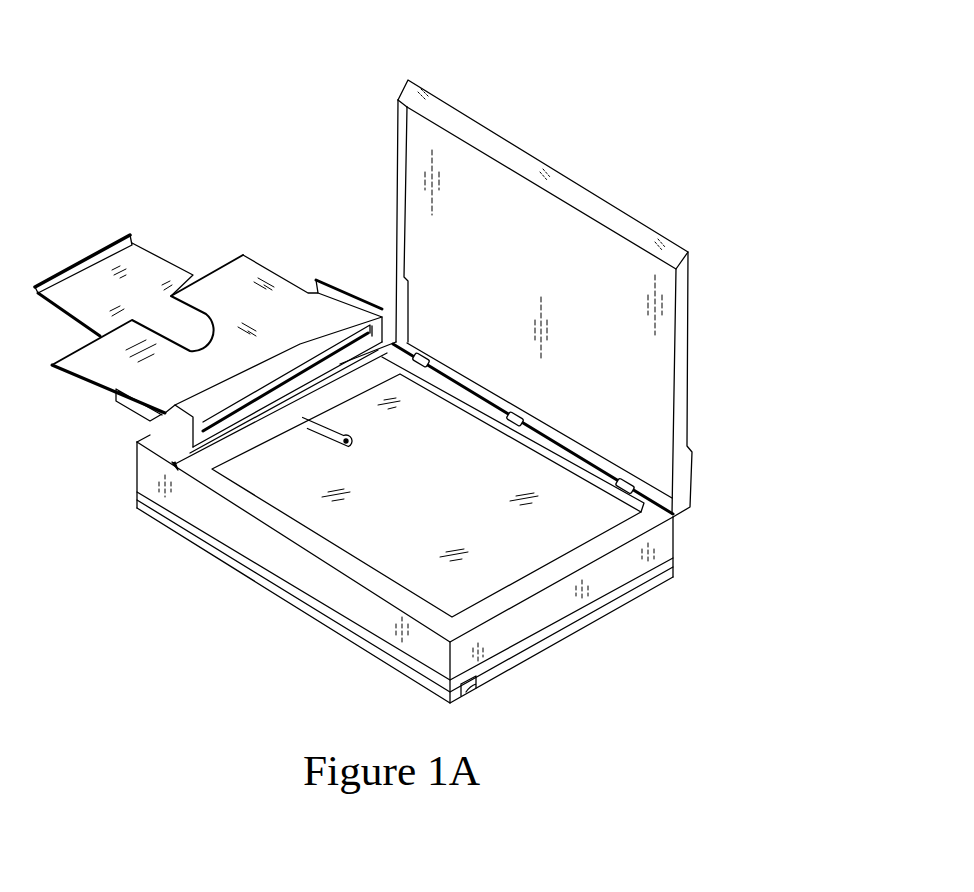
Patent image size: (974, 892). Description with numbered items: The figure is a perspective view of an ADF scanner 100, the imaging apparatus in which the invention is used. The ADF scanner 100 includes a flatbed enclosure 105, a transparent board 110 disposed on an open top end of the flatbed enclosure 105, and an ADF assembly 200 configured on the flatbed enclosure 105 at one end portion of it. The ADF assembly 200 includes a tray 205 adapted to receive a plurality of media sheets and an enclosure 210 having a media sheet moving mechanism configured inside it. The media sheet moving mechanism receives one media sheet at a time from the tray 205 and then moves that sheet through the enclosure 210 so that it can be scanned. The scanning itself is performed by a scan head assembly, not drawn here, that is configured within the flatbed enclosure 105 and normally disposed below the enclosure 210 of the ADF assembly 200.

The ADF scanner 100 is at (810, 116).
The flatbed enclosure 105 is at (689, 533).
The transparent board 110 is at (375, 552).
The ADF assembly 200 is at (288, 212).
The tray 205 is at (68, 380).
The enclosure 210 is at (373, 300).